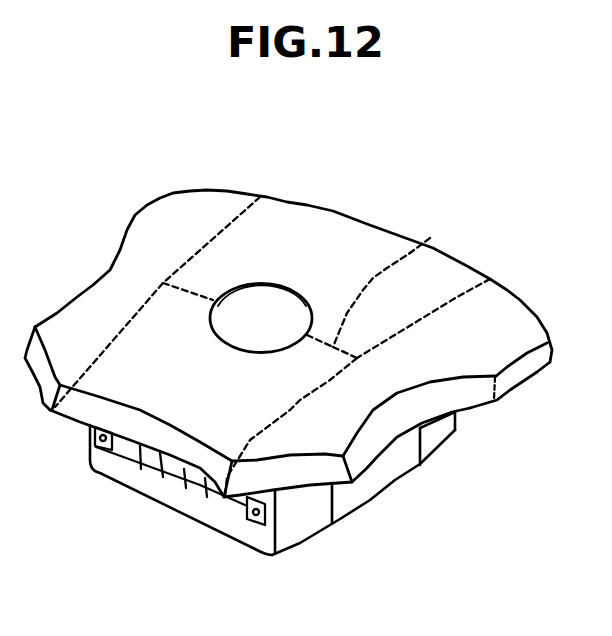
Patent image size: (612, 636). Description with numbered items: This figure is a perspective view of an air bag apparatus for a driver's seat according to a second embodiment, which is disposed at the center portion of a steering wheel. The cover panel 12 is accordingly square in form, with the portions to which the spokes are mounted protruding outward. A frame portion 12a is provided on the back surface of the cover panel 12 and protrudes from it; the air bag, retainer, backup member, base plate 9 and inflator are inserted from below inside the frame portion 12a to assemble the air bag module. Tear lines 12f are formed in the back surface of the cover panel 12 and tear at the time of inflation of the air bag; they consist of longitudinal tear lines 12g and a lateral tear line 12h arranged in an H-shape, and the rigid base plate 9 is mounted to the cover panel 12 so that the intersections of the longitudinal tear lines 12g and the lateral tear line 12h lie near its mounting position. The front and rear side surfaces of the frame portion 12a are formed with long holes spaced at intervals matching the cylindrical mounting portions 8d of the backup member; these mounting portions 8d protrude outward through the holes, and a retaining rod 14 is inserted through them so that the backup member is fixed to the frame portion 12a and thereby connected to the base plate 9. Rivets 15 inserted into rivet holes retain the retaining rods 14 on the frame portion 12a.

The cover panel 12 is at (303, 203).
The frame portion 12a is at (305, 522).
The tear lines 12f is at (581, 210).
The longitudinal tear lines 12g is at (457, 297).
The lateral tear line 12h is at (430, 238).
The base plate 9 is at (397, 458).
The retaining rod 14 is at (152, 458).
The cylindrical mounting portions 8d is at (125, 452).
The rivets 15 is at (255, 550).